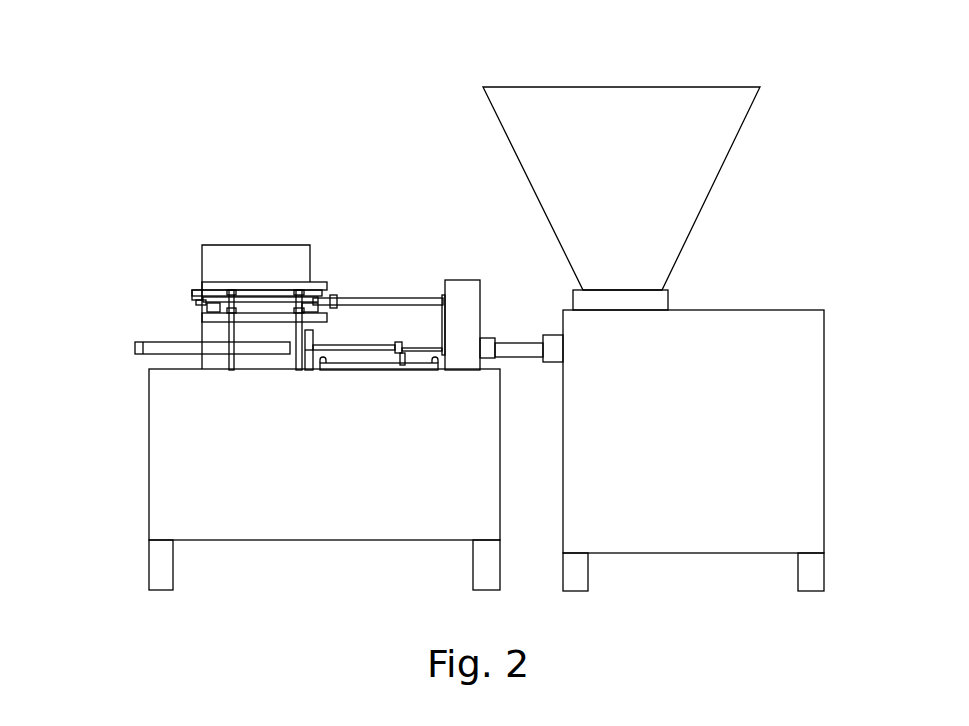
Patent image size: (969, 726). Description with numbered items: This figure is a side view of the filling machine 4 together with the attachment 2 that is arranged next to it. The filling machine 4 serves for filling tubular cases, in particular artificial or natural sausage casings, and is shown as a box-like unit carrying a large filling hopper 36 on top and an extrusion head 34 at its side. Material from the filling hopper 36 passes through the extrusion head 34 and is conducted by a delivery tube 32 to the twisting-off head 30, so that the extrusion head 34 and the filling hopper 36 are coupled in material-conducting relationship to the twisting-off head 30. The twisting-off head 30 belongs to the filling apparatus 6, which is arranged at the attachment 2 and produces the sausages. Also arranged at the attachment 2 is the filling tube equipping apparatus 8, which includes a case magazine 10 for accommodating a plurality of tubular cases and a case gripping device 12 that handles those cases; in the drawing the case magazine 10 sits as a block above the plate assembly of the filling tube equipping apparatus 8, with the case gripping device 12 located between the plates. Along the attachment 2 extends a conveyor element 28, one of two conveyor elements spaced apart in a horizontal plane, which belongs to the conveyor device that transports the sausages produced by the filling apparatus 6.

The attachment 2 is at (110, 140).
The filling machine 4 is at (780, 266).
The filling apparatus 6 is at (398, 286).
The filling tube equipping apparatus 8 is at (318, 270).
The case magazine 10 is at (278, 263).
The case gripping device 12 is at (260, 300).
The conveyor element 28 is at (160, 343).
The twisting-off head 30 is at (458, 303).
The delivery tube 32 is at (505, 350).
The extrusion head 34 is at (548, 350).
The filling hopper 36 is at (703, 145).